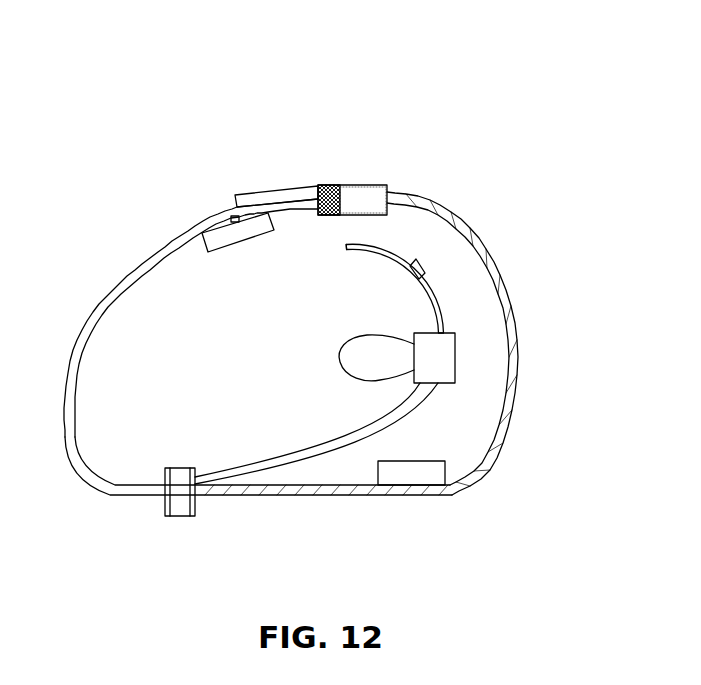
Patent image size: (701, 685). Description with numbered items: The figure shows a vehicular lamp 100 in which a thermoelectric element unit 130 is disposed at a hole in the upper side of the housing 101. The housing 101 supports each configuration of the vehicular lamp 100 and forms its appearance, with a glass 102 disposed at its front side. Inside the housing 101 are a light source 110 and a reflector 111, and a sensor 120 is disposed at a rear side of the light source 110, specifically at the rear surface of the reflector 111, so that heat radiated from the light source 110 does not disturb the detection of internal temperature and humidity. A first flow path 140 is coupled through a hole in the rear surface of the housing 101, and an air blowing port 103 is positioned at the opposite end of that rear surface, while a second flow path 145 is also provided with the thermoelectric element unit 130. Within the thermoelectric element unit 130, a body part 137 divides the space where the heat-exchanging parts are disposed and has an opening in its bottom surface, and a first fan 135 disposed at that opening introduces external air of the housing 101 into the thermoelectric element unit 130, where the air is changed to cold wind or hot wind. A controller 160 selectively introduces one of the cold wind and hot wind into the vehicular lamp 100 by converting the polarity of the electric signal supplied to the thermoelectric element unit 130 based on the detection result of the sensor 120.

The vehicular lamp 100 is at (327, 34).
The housing 101 is at (517, 338).
The glass 102 is at (117, 287).
The air blowing port 103 is at (181, 517).
The light source 110 is at (350, 347).
The reflector 111 is at (357, 254).
The sensor 120 is at (425, 275).
The thermoelectric element unit 130 is at (326, 185).
The first fan 135 is at (353, 186).
The body part 137 is at (388, 186).
The first flow path 140 is at (215, 240).
The second flow path 145 is at (258, 192).
The controller 160 is at (447, 470).